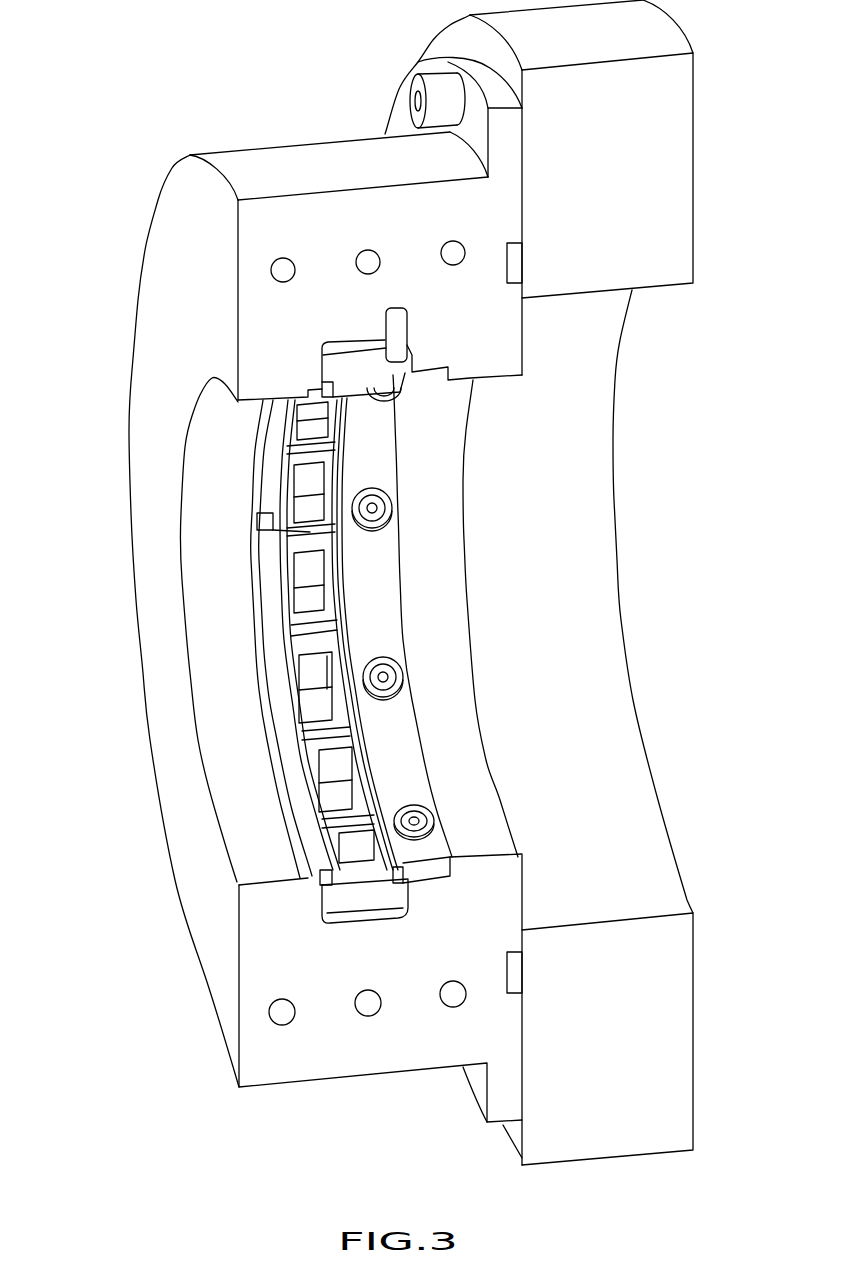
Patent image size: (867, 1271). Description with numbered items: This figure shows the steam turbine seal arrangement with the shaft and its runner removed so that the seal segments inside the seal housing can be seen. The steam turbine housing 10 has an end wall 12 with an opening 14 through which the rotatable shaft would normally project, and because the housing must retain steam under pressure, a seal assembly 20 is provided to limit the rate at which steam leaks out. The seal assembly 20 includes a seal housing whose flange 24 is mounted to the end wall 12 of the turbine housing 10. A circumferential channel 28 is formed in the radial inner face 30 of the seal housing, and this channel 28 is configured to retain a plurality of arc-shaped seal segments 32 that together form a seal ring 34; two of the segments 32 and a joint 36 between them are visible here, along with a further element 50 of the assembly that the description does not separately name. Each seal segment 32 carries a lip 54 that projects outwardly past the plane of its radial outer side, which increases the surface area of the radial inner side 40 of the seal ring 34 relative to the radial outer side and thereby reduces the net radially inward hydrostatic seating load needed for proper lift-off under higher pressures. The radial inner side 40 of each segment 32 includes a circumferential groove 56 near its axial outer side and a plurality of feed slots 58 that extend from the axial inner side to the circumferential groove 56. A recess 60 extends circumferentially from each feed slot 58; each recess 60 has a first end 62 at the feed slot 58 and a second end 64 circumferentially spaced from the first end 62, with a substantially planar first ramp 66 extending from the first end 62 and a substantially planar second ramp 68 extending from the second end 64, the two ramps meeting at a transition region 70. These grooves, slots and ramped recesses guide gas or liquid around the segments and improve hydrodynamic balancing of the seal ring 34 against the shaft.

The steam turbine housing 10 is at (658, 32).
The end wall 12 is at (463, 37).
The opening 14 is at (668, 287).
The seal assembly 20 is at (190, 1065).
The flange 24 is at (400, 120).
The circumferential channel 28 is at (358, 917).
The radial inner face 30 is at (503, 380).
The seal segments 32 is at (277, 663).
The seal ring 34 is at (368, 598).
The joint 36 is at (273, 532).
The radial inner side 40 is at (337, 768).
The upper lug 50 is at (397, 327).
The lip 54 is at (315, 388).
The circumferential groove 56 is at (302, 751).
The feed slots 58 is at (342, 743).
The recess 60 is at (345, 555).
The first end 62 is at (320, 715).
The second end 64 is at (322, 642).
The first ramp 66 is at (333, 802).
The second ramp 68 is at (363, 778).
The transition region 70 is at (385, 807).